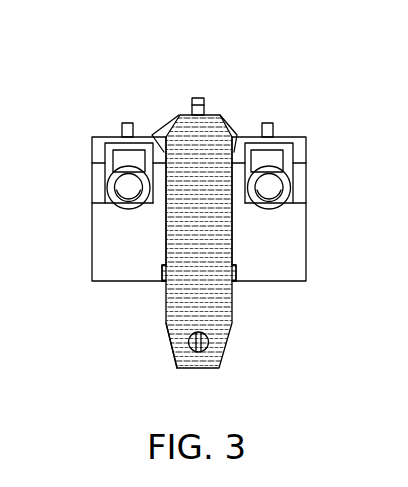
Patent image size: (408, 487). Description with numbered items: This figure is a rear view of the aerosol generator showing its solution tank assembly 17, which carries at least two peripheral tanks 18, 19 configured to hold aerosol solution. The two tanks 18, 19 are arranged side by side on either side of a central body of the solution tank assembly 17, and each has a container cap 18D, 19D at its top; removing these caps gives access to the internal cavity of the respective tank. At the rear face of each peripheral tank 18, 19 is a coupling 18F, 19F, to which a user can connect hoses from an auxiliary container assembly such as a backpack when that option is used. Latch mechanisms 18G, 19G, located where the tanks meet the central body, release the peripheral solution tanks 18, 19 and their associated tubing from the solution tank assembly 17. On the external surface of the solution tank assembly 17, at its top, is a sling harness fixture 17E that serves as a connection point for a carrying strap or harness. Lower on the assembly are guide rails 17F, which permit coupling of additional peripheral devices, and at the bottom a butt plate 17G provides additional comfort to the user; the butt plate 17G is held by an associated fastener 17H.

The solution tank assembly 17 is at (231, 303).
The sling harness fixture 17E is at (194, 97).
The guide rails 17F is at (163, 273).
The butt plate 17G is at (178, 328).
The fastener 17H is at (208, 338).
The peripheral tank 18 is at (92, 157).
The container cap 18D is at (122, 126).
The coupling 18F is at (92, 204).
The latch mechanism 18G is at (160, 125).
The peripheral tank 19 is at (306, 160).
The container cap 19D is at (275, 125).
The coupling 19F is at (306, 200).
The latch mechanism 19G is at (238, 125).